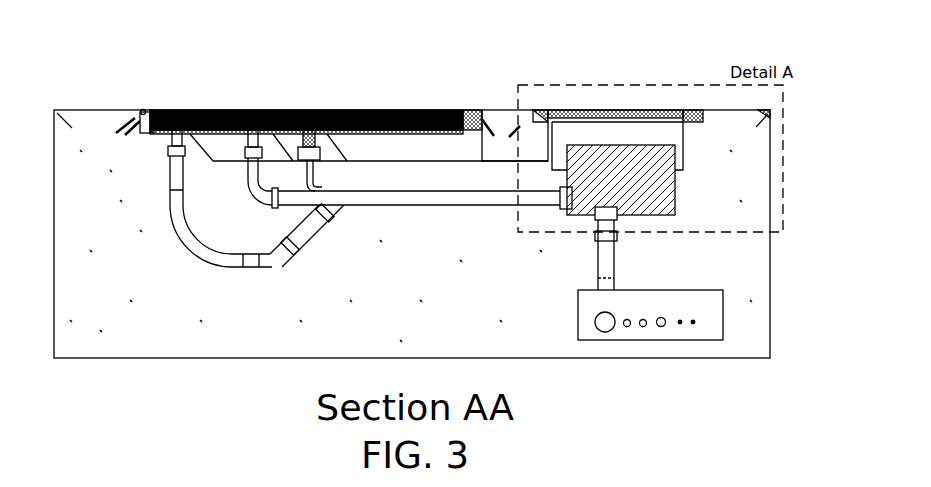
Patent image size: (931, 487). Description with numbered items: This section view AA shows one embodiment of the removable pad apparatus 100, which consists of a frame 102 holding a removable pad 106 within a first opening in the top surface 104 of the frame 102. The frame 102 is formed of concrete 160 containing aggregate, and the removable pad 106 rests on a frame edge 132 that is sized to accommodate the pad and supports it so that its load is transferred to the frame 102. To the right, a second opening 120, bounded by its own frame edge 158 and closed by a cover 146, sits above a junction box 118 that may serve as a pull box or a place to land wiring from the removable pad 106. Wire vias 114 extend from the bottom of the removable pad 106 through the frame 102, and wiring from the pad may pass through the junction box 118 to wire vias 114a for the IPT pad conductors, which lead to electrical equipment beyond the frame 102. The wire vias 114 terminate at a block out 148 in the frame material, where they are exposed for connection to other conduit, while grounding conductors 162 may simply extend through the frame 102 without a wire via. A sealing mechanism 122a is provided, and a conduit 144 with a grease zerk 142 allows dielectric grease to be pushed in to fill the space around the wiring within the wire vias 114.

The removable pad apparatus 100 is at (106, 29).
The frame 102 is at (102, 358).
The top surface 104 is at (69, 108).
The removable pad 106 is at (272, 108).
The wire vias 114 is at (617, 262).
The wire vias for IPT pad conductors 114a is at (606, 338).
The junction boxes 118 is at (648, 192).
The second opening 120 is at (670, 128).
The frame member 122a is at (153, 108).
The frame edge for the first opening 132 is at (137, 108).
The grease zerks 142 is at (560, 132).
The conduit 144 is at (398, 162).
The cover 146 is at (604, 108).
The block out 148 is at (726, 313).
The frame edge for the second opening 158 is at (532, 108).
The concrete 160 is at (153, 280).
The grounding conductors 162 is at (693, 328).